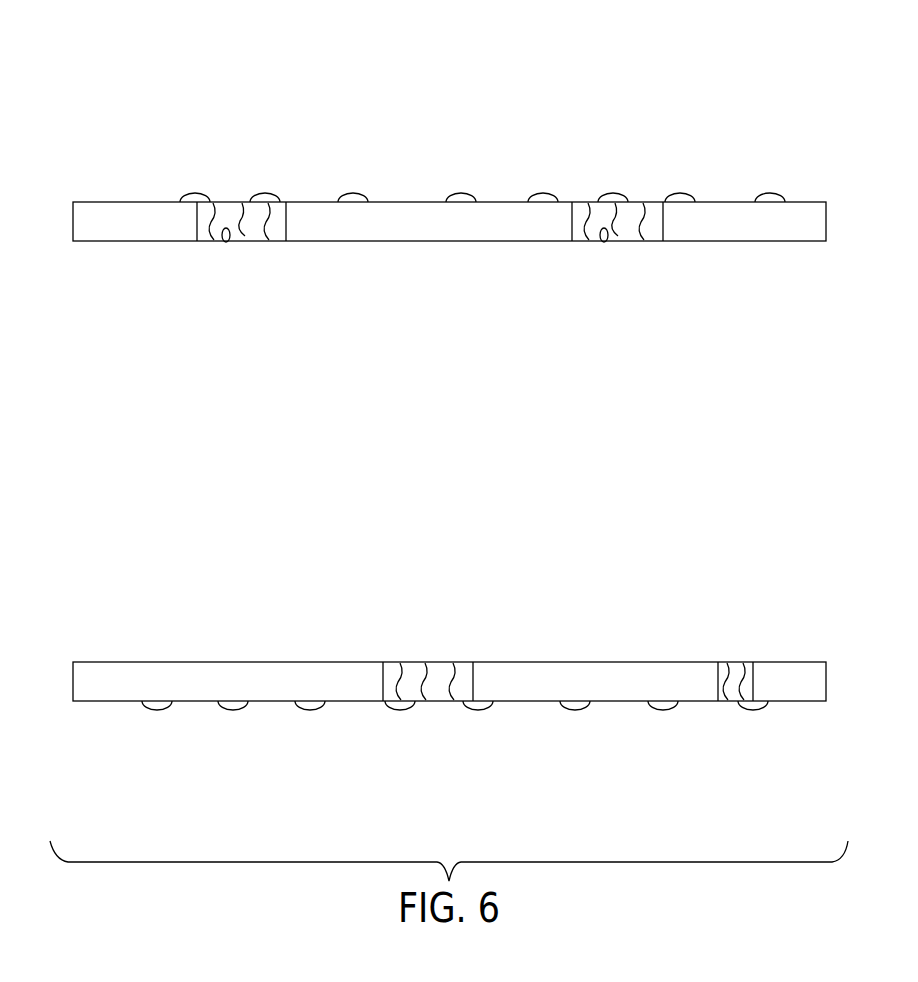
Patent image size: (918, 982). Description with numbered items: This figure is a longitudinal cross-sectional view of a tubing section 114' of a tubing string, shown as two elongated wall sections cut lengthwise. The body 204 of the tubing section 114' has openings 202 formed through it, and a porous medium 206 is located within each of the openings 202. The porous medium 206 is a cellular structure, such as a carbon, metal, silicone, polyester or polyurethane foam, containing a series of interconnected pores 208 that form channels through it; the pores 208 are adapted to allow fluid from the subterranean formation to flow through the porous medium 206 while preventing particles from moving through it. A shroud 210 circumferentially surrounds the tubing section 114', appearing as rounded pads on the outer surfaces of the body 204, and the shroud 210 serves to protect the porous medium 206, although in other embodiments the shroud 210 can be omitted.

The tubing section 114' is at (449, 128).
The openings 202 is at (297, 315).
The body 204 is at (790, 690).
The porous medium 206 is at (205, 232).
The pores 208 is at (240, 232).
The shroud 210 is at (263, 193).